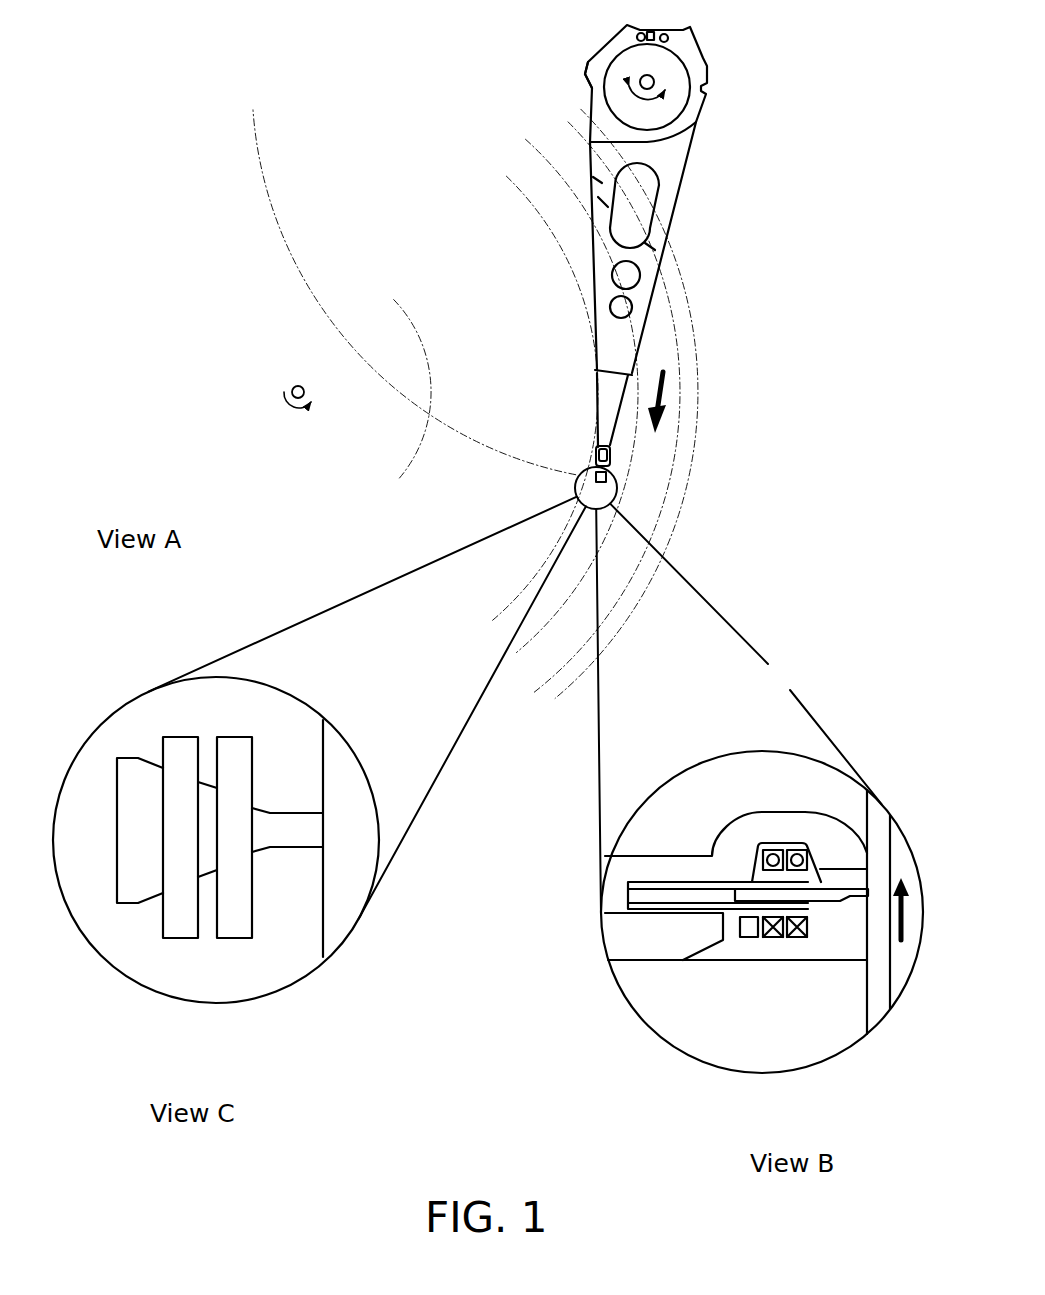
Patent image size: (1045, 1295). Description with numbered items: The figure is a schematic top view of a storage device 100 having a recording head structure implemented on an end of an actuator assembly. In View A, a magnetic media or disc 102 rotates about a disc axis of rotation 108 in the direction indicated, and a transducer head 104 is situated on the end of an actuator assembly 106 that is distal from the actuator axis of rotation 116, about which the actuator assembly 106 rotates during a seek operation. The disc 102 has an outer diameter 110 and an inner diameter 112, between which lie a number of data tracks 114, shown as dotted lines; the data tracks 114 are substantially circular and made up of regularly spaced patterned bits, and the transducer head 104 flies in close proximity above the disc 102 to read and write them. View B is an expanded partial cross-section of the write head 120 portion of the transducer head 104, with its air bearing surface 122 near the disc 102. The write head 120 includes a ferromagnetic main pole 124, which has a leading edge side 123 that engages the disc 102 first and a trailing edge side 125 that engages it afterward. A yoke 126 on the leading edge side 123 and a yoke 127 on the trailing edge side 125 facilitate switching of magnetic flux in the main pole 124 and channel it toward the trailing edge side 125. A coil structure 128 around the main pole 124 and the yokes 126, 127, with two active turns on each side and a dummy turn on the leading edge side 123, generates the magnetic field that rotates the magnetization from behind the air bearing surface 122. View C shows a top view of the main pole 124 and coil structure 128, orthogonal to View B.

The storage device 100 is at (172, 156).
The magnetic media or disc 102 is at (700, 323).
The transducer head 104 is at (575, 481).
The actuator assembly 106 is at (585, 74).
The disc axis of rotation 108 is at (296, 385).
The outer diameter 110 is at (685, 390).
The inner diameter 112 is at (397, 473).
The data tracks 114 is at (690, 481).
The actuator axis of rotation 116 is at (652, 83).
The write head 120 is at (704, 803).
The air bearing surface 122 is at (327, 890).
The leading edge side 123 is at (820, 870).
The main pole 124 is at (257, 850).
The trailing edge side 125 is at (825, 870).
The yoke 126 is at (690, 913).
The yoke 127 is at (693, 882).
The coil structure 128 is at (176, 952).